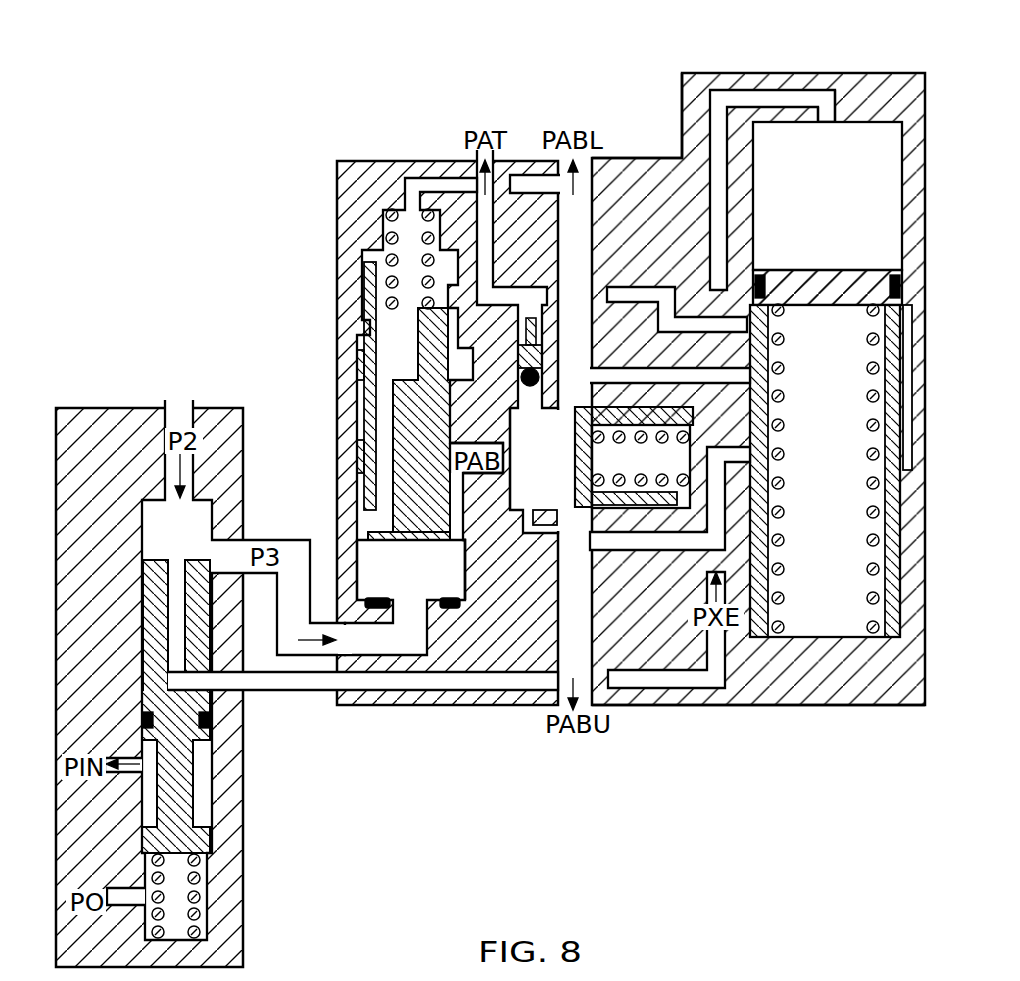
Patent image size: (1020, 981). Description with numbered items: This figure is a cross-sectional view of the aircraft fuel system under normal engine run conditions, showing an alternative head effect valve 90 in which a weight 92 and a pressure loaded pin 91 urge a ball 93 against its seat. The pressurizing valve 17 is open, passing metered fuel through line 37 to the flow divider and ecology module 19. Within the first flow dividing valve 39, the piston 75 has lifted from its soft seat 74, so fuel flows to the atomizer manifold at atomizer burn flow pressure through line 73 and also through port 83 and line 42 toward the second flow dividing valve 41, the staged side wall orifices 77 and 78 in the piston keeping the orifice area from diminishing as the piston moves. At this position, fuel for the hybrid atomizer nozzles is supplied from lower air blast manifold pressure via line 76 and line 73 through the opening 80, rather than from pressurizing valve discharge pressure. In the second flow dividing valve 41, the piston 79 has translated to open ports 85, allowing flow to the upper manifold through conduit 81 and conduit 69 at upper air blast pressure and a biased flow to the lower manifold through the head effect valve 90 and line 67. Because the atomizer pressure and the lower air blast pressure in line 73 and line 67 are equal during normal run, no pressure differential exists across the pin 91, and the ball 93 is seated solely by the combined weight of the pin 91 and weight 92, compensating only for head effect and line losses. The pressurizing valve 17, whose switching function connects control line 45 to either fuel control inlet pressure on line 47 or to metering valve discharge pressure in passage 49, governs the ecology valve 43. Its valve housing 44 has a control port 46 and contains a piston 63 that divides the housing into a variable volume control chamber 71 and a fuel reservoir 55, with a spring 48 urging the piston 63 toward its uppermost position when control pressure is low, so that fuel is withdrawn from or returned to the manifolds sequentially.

The pressurizing valve 17 is at (265, 828).
The flow divider and ecology module 19 is at (696, 718).
The line 37 is at (292, 542).
The first flow dividing valve 39 is at (316, 266).
The second flow dividing valve 41 is at (690, 447).
The line 42 is at (480, 474).
The ecology valve 43 is at (798, 630).
The valve housing 44 is at (805, 692).
The control line 45 is at (768, 97).
The control port 46 is at (832, 106).
The line 47 is at (118, 778).
The spring 48 is at (784, 572).
The passage 49 is at (180, 570).
The fuel reservoir 55 is at (809, 530).
The piston 63 is at (828, 308).
The line 67 is at (592, 160).
The conduit 69 is at (547, 683).
The variable volume control chamber 71 is at (812, 211).
The line 73 is at (490, 205).
The soft seat 74 is at (383, 600).
The piston 75 is at (372, 292).
The line 76 is at (440, 190).
The side wall orifice 77 is at (362, 422).
The side wall orifice 78 is at (372, 450).
The piston 79 is at (576, 463).
The opening 80 is at (415, 330).
The conduit 81 is at (520, 560).
The port 83 is at (452, 478).
The ports 85 is at (565, 410).
The head effect valve 90 is at (598, 283).
The pin 91 is at (540, 333).
The weight 92 is at (542, 355).
The ball 93 is at (540, 377).